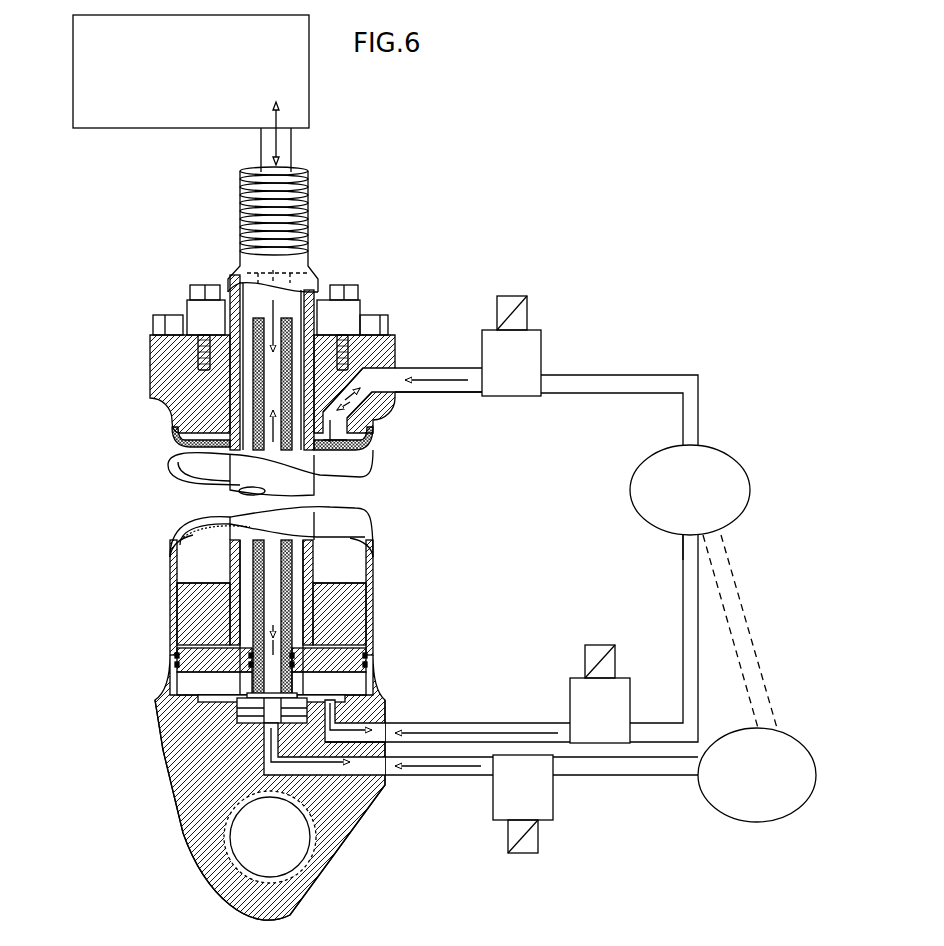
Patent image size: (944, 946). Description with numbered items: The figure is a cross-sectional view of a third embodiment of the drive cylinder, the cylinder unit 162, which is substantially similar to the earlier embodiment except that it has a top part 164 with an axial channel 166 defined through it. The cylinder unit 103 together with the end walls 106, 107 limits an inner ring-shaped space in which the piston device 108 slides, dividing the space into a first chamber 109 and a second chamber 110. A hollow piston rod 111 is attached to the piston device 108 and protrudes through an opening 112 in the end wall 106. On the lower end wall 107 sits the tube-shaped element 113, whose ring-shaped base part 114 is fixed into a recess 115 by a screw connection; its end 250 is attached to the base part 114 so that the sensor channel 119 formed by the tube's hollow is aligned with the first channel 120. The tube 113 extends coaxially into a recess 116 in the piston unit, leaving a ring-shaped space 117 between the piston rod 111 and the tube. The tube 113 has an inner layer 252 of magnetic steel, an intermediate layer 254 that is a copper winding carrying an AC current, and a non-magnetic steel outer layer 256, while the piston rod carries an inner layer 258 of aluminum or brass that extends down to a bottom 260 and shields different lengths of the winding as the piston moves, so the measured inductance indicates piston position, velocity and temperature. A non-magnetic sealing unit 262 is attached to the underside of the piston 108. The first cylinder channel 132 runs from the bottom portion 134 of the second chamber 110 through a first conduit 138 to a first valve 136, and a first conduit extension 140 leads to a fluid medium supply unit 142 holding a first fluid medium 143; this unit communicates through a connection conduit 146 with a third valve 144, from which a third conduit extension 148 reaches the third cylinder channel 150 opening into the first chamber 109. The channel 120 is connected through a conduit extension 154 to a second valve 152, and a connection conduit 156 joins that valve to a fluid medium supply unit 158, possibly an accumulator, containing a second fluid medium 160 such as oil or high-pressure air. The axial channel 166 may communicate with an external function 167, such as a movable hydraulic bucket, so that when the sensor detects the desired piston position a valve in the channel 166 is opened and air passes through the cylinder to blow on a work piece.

The cylinder unit 103 is at (378, 465).
The end wall 106 is at (438, 368).
The end wall 107 is at (250, 723).
The piston device 108 is at (196, 647).
The first chamber 109 is at (198, 562).
The second chamber 110 is at (378, 679).
The piston rod 111 is at (302, 484).
The opening 112 is at (318, 290).
The tube-shaped element 113 is at (250, 556).
The ring-shaped base part 114 is at (245, 716).
The recess 115 is at (385, 701).
The recess 116 is at (250, 283).
The ring-shaped space 117 is at (168, 423).
The channel 119 is at (270, 682).
The first channel 120 is at (186, 796).
The first cylinder channel 132 is at (388, 723).
The bottom portion 134 is at (372, 637).
The first valve 136 is at (615, 690).
The first conduit 138 is at (492, 723).
The first conduit extension 140 is at (688, 648).
The fluid medium supply unit 142 is at (708, 458).
The first fluid medium 143 is at (643, 497).
The third valve 144 is at (525, 350).
The connection conduit 146 is at (596, 385).
The third conduit extension 148 is at (423, 384).
The third cylinder channel 150 is at (397, 367).
The second valve 152 is at (542, 808).
The conduit extension 154 is at (390, 768).
The connection conduit 156 is at (617, 768).
The fluid medium supply unit 158 is at (775, 745).
The second fluid medium 160 is at (733, 808).
The cylinder unit 162 is at (436, 201).
The top part 164 is at (318, 213).
The axial channel 166 is at (266, 151).
The external function 167 is at (128, 82).
The end 250 is at (250, 712).
The inner layer 252 is at (250, 596).
The intermediate layer 254 is at (250, 628).
The outer layer 256 is at (250, 641).
The inner layer 258 is at (250, 614).
The bottom 260 is at (375, 585).
The non-magnetic sealing unit 262 is at (372, 650).